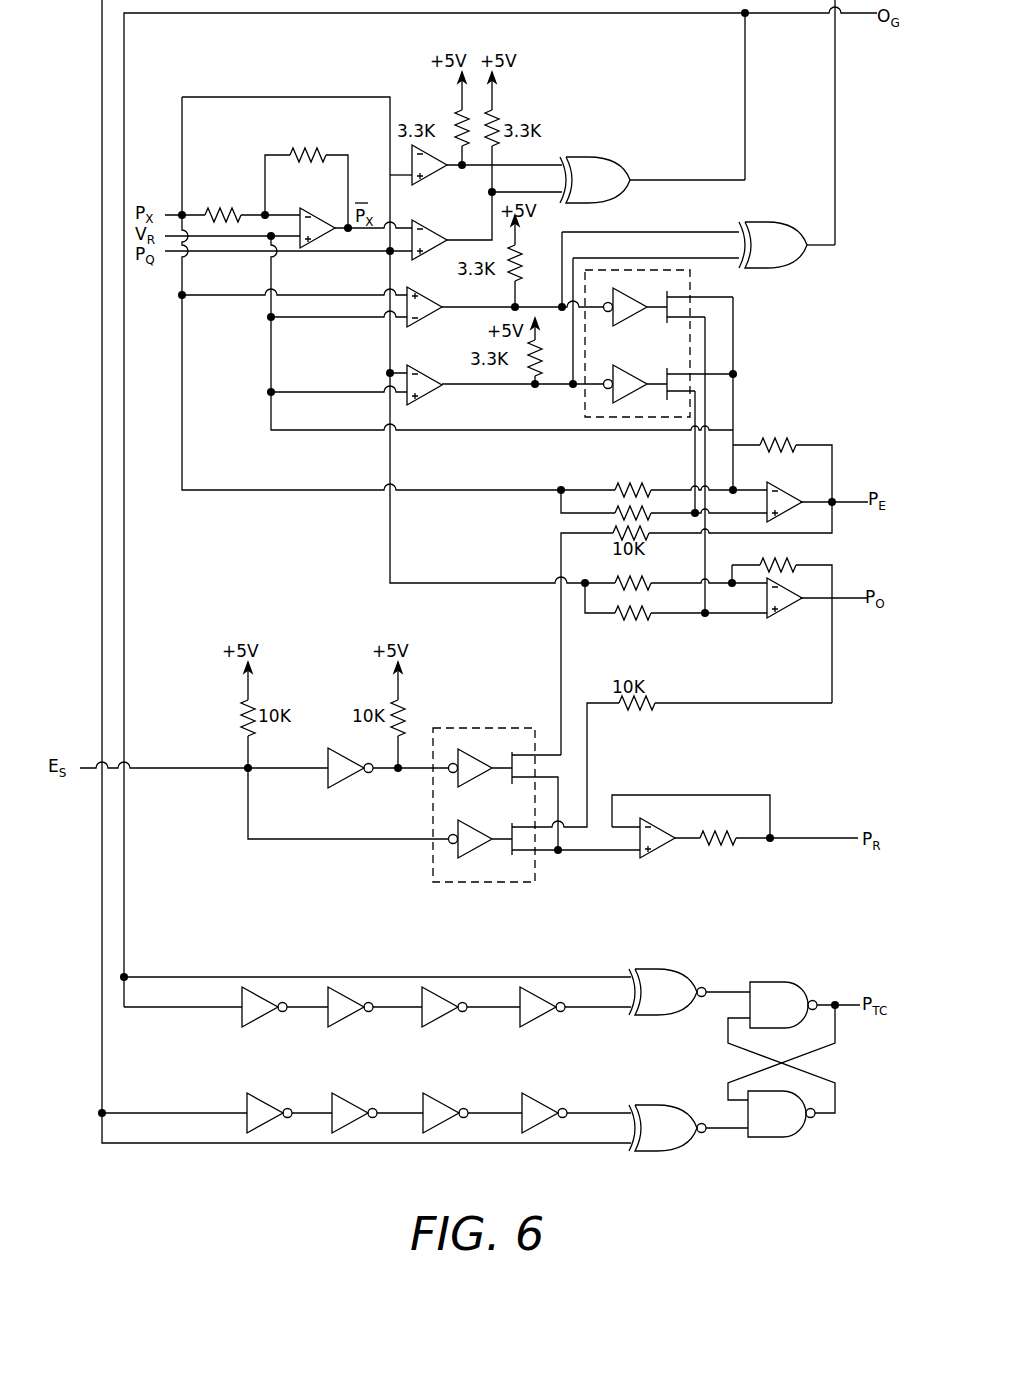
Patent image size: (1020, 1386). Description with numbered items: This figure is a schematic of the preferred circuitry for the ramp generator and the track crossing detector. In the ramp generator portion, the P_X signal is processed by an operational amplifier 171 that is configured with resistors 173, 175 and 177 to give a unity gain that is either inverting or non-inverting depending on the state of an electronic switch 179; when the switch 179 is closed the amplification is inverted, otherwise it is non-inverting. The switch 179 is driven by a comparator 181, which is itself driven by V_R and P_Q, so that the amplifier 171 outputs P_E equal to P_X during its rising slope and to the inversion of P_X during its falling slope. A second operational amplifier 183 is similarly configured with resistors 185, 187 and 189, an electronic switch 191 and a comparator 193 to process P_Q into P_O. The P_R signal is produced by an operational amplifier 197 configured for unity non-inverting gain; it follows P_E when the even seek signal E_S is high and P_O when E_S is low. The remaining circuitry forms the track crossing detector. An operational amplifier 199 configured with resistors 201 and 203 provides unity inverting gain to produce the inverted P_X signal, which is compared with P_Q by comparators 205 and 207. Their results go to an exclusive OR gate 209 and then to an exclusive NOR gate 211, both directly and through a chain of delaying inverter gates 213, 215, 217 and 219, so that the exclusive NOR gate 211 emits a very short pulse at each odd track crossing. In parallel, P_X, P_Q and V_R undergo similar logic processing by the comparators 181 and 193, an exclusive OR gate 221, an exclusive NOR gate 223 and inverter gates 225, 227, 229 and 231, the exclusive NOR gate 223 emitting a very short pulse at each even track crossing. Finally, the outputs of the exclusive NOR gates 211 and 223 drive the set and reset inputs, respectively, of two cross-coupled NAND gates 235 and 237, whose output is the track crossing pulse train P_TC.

The operational amplifier 171 is at (795, 492).
The resistor 173 is at (787, 443).
The resistor 175 is at (615, 488).
The resistor 177 is at (618, 513).
The electronic switch 179 is at (633, 375).
The comparator 181 is at (420, 398).
The operational amplifier 183 is at (775, 612).
The resistor 185 is at (787, 564).
The resistor 187 is at (617, 584).
The resistor 189 is at (635, 620).
The electronic switch 191 is at (629, 320).
The comparator 193 is at (428, 298).
The operational amplifier 197 is at (656, 852).
The operational amplifier 199 is at (328, 190).
The resistor 201 is at (320, 155).
The resistor 203 is at (240, 213).
The comparator 205 is at (423, 229).
The comparator 207 is at (425, 178).
The exclusive OR gate 209 is at (632, 146).
The exclusive NOR gate 211 is at (655, 968).
The inverter gate 213 is at (255, 1026).
The inverter gate 215 is at (343, 1026).
The inverter gate 217 is at (440, 1026).
The inverter gate 219 is at (538, 1026).
The exclusive OR gate 221 is at (765, 270).
The exclusive NOR gate 223 is at (662, 1153).
The inverter gate 225 is at (283, 1088).
The inverter gate 227 is at (362, 1090).
The inverter gate 229 is at (443, 1090).
The inverter gate 231 is at (565, 1093).
The NAND gate 235 is at (772, 982).
The NAND gate 237 is at (782, 1138).